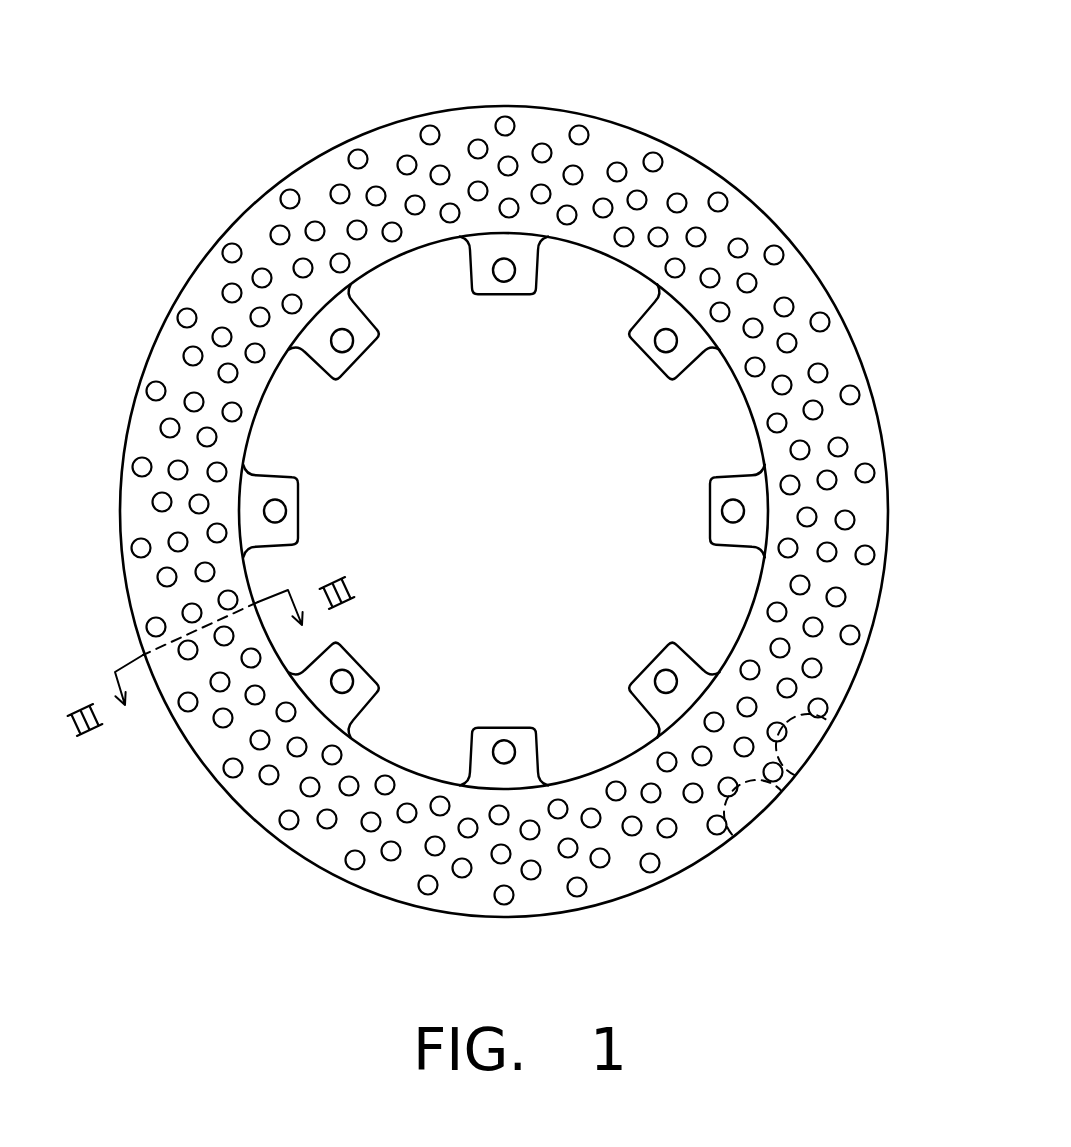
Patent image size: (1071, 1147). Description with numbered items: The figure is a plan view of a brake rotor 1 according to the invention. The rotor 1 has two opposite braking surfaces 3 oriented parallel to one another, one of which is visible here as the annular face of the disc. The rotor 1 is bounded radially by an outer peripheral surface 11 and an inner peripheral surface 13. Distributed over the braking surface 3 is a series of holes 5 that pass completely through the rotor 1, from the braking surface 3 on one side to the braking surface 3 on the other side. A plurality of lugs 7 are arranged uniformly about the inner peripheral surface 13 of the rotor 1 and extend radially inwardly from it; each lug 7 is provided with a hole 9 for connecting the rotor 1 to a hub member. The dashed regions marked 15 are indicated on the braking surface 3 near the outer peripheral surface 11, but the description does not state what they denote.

The brake rotor 1 is at (504, 470).
The braking surface 3 is at (504, 470).
The holes 5 is at (510, 205).
The lugs 7 is at (337, 365).
The hole 9 is at (348, 342).
The outer peripheral surface 11 is at (353, 133).
The inner peripheral surface 13 is at (261, 405).
The marked regions 15 is at (810, 748).